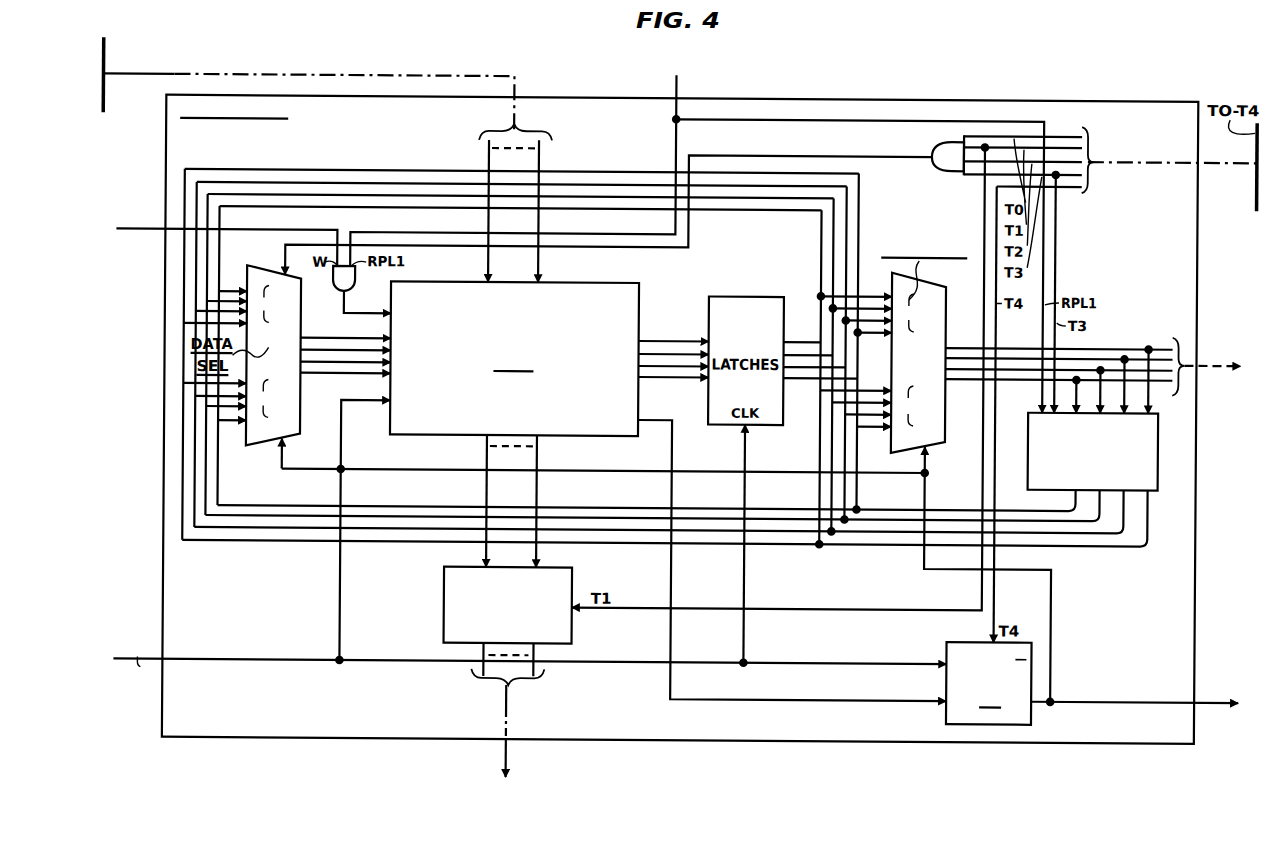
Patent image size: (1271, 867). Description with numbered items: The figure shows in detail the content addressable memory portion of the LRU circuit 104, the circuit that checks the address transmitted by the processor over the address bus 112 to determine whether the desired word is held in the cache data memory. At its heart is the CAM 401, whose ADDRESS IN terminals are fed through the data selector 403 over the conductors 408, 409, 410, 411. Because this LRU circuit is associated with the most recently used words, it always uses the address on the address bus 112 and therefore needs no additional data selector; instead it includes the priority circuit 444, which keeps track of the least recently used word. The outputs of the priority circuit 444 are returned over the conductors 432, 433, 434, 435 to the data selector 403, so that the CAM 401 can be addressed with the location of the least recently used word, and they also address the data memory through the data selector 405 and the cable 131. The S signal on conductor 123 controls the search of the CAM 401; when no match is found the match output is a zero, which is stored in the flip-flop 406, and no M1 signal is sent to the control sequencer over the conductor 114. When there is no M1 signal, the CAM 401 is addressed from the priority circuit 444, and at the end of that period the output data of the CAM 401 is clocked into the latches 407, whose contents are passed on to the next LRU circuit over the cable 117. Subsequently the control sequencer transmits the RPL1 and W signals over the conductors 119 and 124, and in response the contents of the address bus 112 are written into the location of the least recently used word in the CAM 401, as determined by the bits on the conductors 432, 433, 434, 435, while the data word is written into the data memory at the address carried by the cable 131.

The LRU circuit 104 is at (165, 105).
The address bus 112 is at (103, 93).
The conductor 124 is at (144, 238).
The conductor 119 is at (674, 78).
The data selector 403 is at (262, 257).
The conductor 408 is at (346, 339).
The conductor 409 is at (347, 366).
The conductor 410 is at (368, 354).
The conductor 411 is at (378, 377).
The CAM 401 is at (573, 284).
The conductor 123 is at (137, 672).
The data selector 405 is at (928, 282).
The cable 131 is at (1211, 362).
The priority circuit 444 is at (1028, 421).
The conductor 432 is at (1072, 547).
The conductor 433 is at (1072, 534).
The conductor 434 is at (1070, 522).
The conductor 435 is at (1065, 512).
The flip-flop 406 is at (953, 641).
The conductor 114 is at (1205, 706).
The latches 407 is at (573, 573).
The cable 117 is at (512, 757).